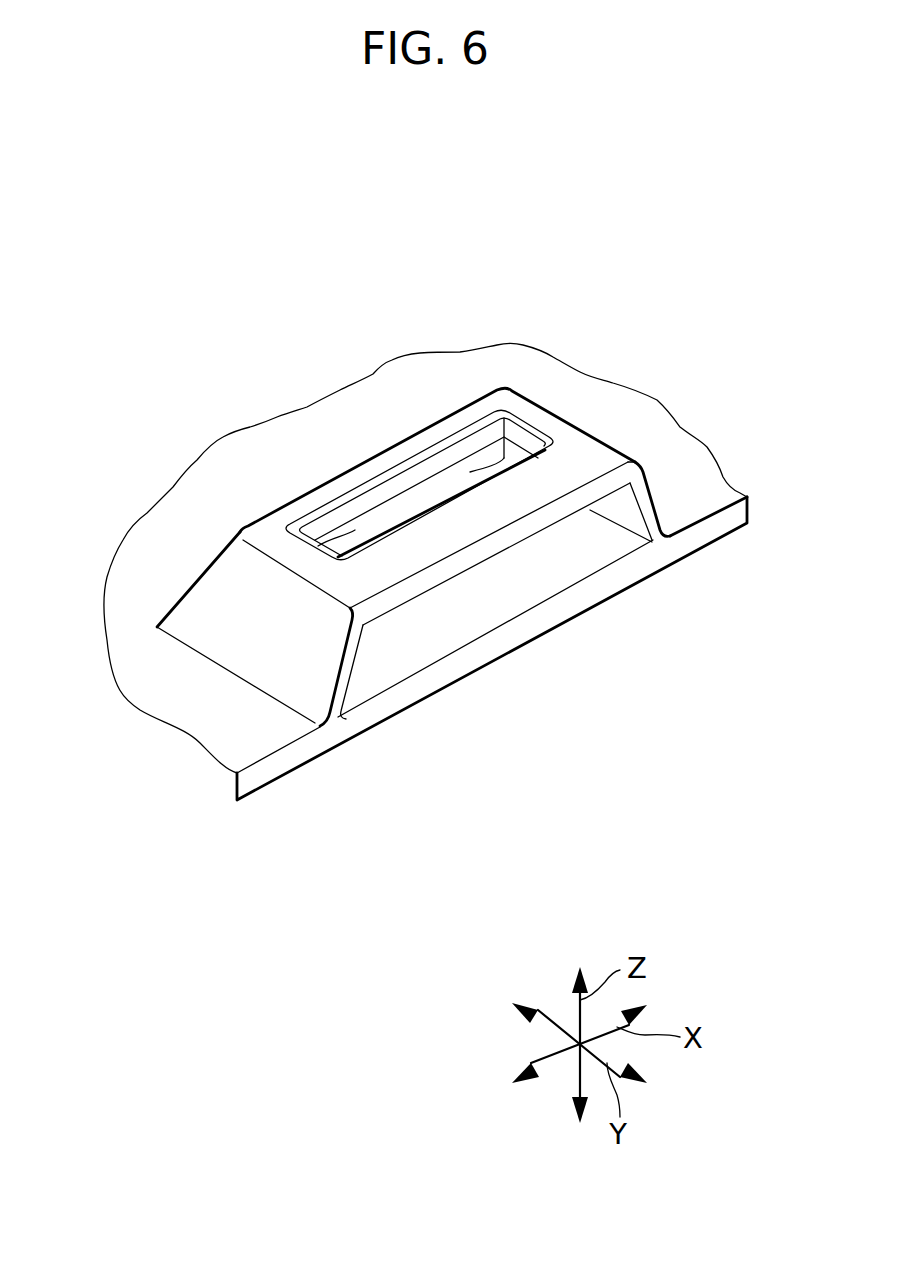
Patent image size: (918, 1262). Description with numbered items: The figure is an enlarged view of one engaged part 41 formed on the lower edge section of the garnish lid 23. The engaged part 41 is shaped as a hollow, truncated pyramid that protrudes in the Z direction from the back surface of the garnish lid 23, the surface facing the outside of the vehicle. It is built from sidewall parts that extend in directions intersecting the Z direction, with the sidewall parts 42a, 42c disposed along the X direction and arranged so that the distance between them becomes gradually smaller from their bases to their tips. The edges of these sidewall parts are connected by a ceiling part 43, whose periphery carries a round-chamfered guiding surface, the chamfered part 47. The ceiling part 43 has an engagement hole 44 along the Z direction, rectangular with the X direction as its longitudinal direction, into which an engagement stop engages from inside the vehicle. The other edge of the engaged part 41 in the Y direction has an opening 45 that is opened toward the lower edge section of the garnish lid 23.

The garnish lid 23 is at (724, 552).
The engaged part 41 is at (418, 550).
The sidewall part 42a is at (630, 473).
The sidewall part 42c is at (300, 583).
The ceiling part 43 is at (593, 457).
The engagement hole 44 is at (442, 457).
The opening 45 is at (347, 663).
The chamfered part 47 is at (417, 423).